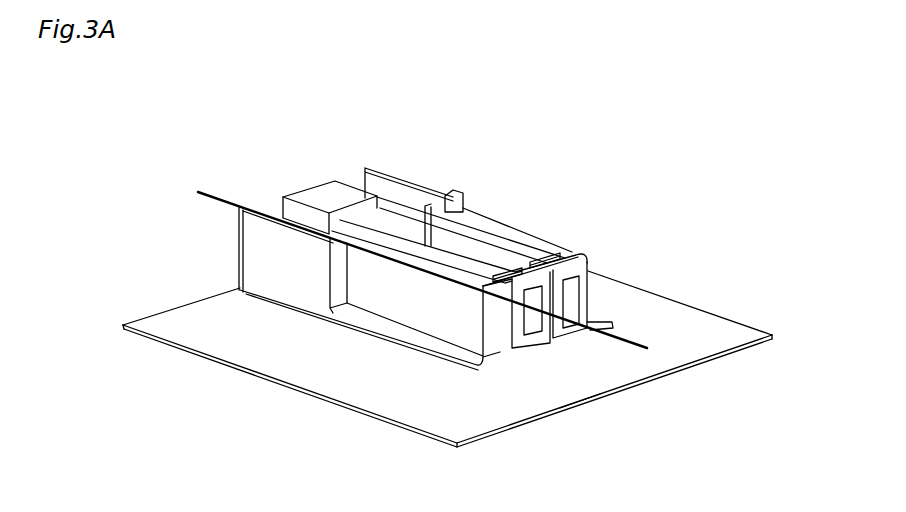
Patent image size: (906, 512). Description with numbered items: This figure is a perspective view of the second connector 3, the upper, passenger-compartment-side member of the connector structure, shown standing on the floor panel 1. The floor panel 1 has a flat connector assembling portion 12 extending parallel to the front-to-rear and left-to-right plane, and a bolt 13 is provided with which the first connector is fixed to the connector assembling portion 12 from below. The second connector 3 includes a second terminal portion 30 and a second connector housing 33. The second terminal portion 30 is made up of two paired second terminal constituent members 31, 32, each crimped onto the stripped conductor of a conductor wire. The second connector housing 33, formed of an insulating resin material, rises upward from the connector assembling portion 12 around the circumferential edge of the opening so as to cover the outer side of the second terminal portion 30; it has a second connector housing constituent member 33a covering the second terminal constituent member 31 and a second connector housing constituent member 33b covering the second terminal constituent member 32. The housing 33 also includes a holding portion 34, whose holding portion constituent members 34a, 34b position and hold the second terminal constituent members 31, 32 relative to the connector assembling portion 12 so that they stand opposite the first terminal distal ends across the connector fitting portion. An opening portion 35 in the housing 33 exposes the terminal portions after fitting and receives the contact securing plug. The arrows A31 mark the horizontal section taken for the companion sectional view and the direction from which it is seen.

The floor panel 1 is at (758, 312).
The second connector 3 is at (322, 114).
The connector assembling portion 12 is at (713, 318).
The bolt 13 is at (578, 399).
The second terminal portion 30 is at (474, 170).
The second terminal constituent member 31 is at (472, 248).
The second terminal constituent member 32 is at (464, 245).
The second connector housing 33 is at (340, 250).
The second connector housing constituent member 33a is at (420, 180).
The second connector housing constituent member 33b is at (250, 256).
The holding portion 34 is at (430, 311).
The holding portion constituent member 34a is at (555, 243).
The holding portion constituent member 34b is at (408, 302).
The opening portion 35 is at (517, 243).
The arrows A31 is at (213, 182).